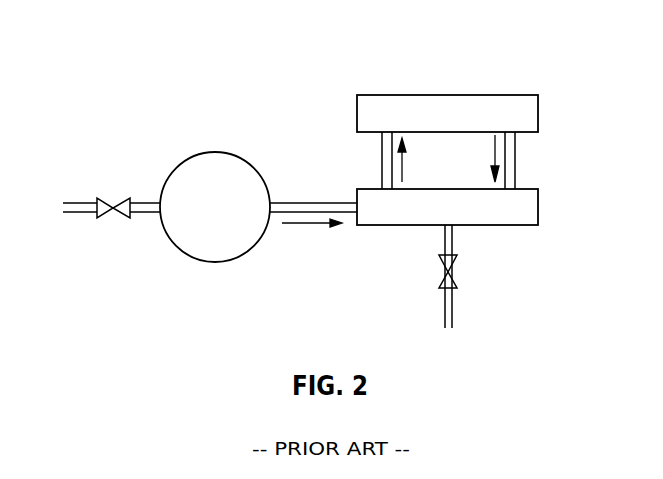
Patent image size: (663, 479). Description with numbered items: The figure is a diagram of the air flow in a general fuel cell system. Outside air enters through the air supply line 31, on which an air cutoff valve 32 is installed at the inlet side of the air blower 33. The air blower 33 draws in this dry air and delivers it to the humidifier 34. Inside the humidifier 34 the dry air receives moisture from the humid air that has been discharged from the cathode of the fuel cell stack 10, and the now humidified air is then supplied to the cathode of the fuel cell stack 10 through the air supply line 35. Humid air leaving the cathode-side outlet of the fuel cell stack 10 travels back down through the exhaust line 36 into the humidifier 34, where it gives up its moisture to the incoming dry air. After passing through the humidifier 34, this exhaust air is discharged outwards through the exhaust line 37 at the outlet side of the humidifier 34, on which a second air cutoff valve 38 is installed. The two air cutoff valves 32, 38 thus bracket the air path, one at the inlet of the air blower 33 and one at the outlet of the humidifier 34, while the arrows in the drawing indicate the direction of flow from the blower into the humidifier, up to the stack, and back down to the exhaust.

The fuel cell stack 10 is at (479, 94).
The air supply line 31 is at (80, 200).
The air cutoff valve 32 is at (112, 196).
The air blower 33 is at (192, 155).
The humidifier 34 is at (539, 208).
The air supply line 35 is at (381, 163).
The exhaust line 36 is at (516, 165).
The exhaust line 37 is at (454, 308).
The air cutoff valve 38 is at (458, 278).